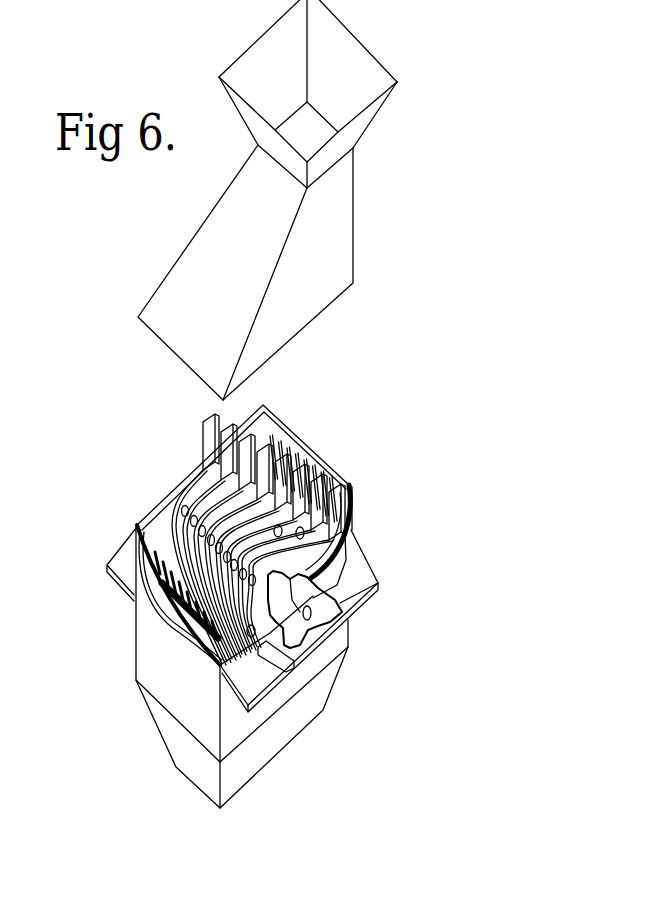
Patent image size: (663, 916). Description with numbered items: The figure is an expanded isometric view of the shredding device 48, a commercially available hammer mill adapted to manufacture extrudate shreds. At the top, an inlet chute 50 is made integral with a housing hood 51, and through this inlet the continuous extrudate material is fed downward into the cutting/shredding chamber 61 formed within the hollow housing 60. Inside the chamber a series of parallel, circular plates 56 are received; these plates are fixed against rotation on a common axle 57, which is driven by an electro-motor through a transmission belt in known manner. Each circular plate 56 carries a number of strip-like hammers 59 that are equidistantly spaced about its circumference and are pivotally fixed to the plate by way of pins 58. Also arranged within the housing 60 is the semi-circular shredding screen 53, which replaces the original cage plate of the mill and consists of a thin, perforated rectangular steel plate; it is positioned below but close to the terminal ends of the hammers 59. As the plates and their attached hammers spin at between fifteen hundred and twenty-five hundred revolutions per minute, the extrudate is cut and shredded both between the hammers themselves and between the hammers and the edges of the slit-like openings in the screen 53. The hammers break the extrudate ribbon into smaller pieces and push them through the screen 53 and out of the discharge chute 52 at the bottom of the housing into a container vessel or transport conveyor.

The shredding device 48 is at (428, 385).
The inlet chute 50 is at (344, 68).
The housing hood 51 is at (323, 245).
The discharge chute 52 is at (272, 758).
The shredding screen 53 is at (347, 555).
The circular plates 56 is at (342, 485).
The common axle 57 is at (310, 620).
The pins 58 is at (283, 530).
The strip-like hammers 59 is at (293, 463).
The hollow housing 60 is at (145, 640).
The cutting/shredding chamber 61 is at (167, 528).